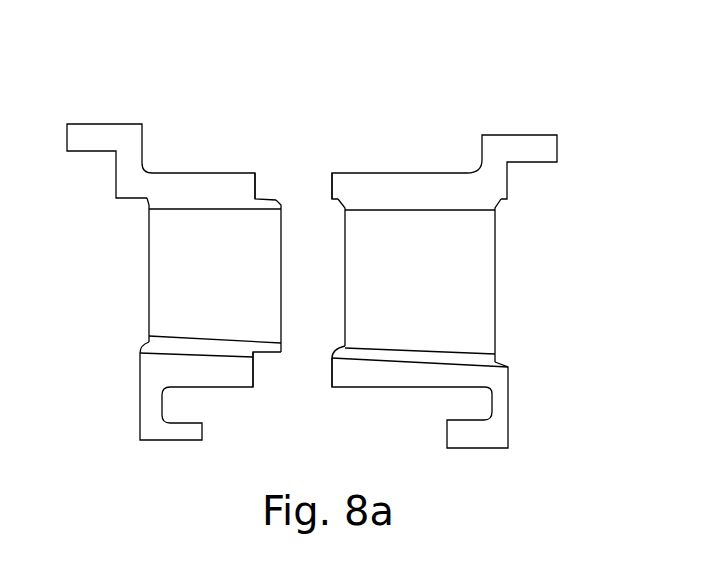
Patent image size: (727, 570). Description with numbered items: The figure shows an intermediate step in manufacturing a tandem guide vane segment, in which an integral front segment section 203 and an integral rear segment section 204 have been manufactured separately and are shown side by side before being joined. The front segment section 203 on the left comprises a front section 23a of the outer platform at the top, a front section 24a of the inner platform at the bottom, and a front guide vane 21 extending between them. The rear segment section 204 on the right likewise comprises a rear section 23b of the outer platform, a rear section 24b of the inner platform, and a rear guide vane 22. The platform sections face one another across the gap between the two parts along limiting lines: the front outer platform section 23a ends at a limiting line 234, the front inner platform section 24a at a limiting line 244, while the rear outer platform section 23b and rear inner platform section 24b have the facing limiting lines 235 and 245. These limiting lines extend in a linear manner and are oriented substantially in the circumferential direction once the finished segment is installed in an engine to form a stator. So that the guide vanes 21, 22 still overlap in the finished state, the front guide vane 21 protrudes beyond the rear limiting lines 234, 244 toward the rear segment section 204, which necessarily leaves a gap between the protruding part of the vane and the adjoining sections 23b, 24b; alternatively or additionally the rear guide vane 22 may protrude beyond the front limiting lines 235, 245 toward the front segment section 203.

The front segment section 203 is at (92, 110).
The rear segment section 204 is at (520, 120).
The front guide vane 21 is at (149, 278).
The rear guide vane 22 is at (495, 284).
The front section of the outer platform 23a is at (194, 173).
The rear section of the outer platform 23b is at (427, 173).
The limiting line 234 is at (256, 182).
The limiting line 235 is at (330, 178).
The front section of the inner platform 24a is at (233, 387).
The rear section of the inner platform 24b is at (397, 387).
The limiting line 244 is at (253, 372).
The limiting line 245 is at (332, 372).